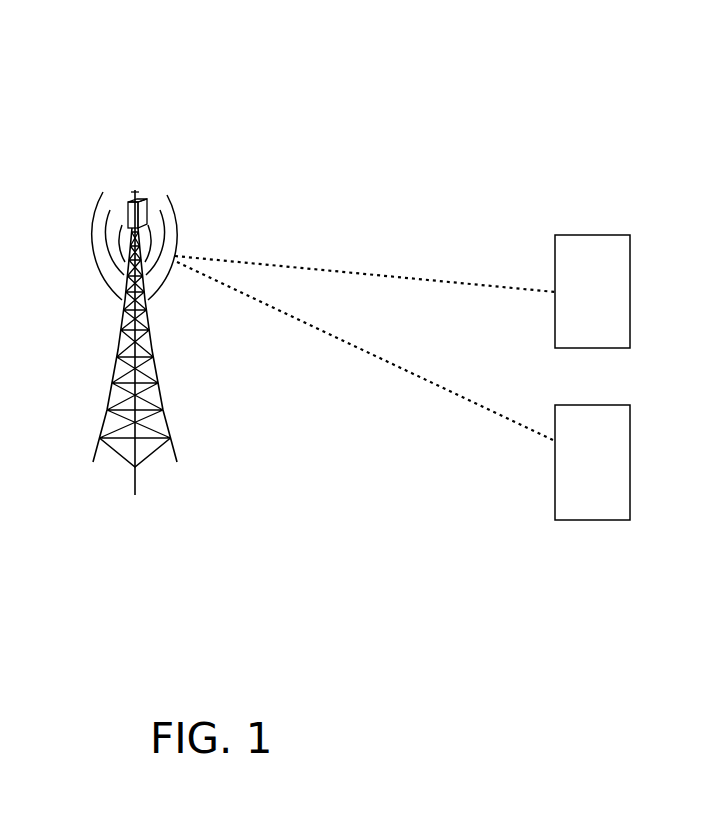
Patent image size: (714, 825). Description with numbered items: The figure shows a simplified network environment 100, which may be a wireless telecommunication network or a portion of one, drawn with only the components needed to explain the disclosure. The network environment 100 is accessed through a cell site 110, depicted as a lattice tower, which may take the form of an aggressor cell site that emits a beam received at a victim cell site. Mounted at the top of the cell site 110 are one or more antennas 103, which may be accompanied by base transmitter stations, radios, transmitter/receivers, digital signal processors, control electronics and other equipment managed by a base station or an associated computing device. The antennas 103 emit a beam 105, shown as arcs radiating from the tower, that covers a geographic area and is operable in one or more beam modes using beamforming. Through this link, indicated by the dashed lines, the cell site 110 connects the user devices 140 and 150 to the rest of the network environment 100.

The network environment 100 is at (491, 77).
The antennas 103 is at (130, 215).
The beam 105 is at (170, 212).
The cell site 110 is at (118, 345).
The user device 140 is at (592, 291).
The user device 150 is at (592, 462).